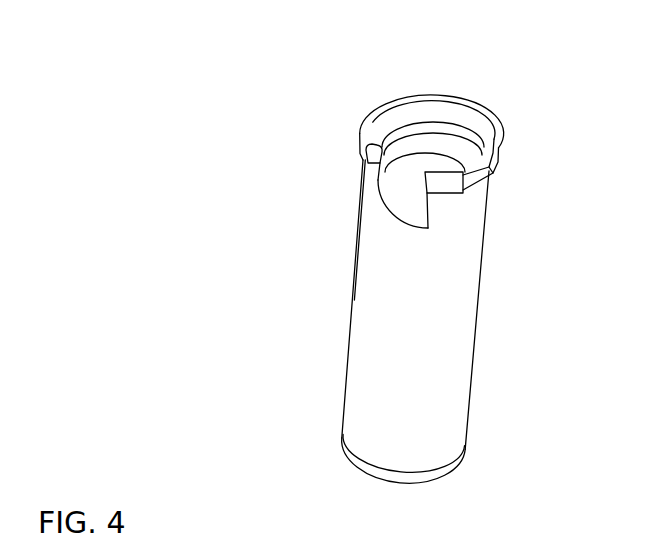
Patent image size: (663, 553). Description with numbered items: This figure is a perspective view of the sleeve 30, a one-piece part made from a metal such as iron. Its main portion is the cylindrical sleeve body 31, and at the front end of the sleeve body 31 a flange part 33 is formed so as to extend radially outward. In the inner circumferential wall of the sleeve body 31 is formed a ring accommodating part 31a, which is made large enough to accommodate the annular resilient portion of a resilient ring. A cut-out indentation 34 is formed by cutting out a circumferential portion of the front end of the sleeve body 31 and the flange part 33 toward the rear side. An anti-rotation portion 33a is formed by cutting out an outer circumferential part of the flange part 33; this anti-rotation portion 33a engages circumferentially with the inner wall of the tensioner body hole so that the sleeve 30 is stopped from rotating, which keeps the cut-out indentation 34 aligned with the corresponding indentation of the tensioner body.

The sleeve 30 is at (290, 91).
The sleeve body 31 is at (435, 316).
The ring accommodating part 31a is at (381, 177).
The flange part 33 is at (490, 115).
The anti-rotation portion 33a is at (496, 168).
The cut-out indentation 34 is at (393, 206).